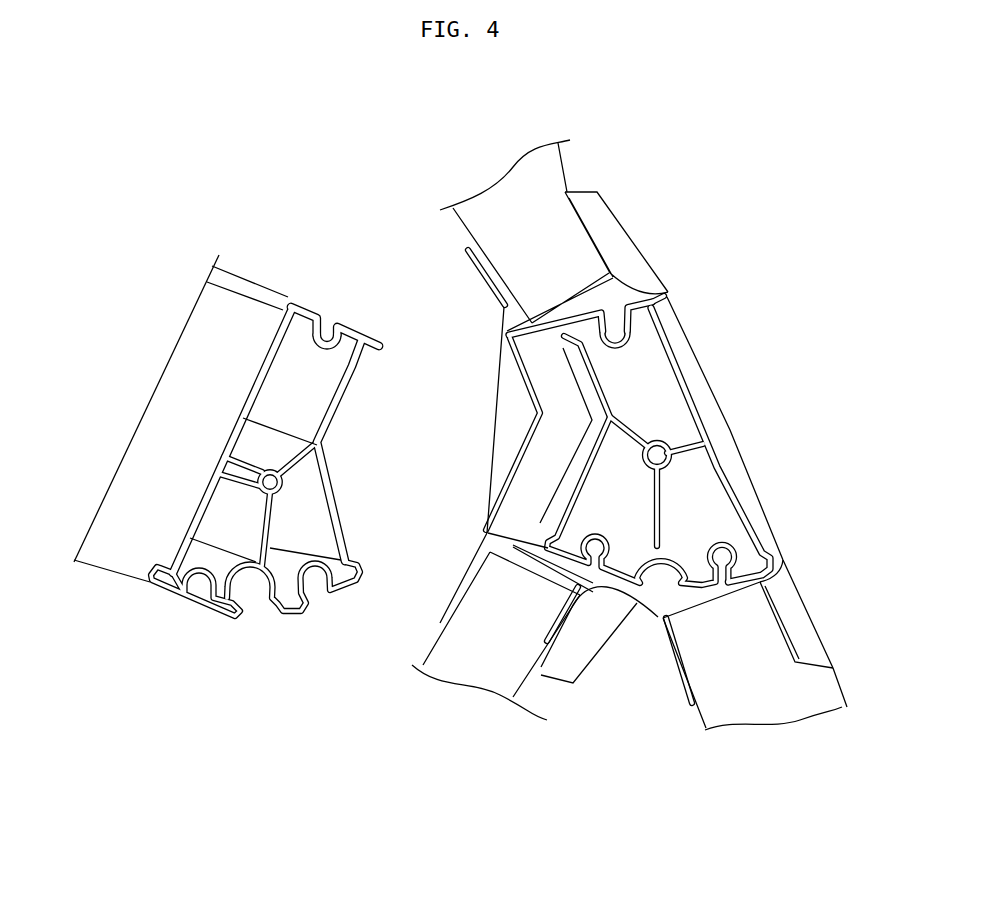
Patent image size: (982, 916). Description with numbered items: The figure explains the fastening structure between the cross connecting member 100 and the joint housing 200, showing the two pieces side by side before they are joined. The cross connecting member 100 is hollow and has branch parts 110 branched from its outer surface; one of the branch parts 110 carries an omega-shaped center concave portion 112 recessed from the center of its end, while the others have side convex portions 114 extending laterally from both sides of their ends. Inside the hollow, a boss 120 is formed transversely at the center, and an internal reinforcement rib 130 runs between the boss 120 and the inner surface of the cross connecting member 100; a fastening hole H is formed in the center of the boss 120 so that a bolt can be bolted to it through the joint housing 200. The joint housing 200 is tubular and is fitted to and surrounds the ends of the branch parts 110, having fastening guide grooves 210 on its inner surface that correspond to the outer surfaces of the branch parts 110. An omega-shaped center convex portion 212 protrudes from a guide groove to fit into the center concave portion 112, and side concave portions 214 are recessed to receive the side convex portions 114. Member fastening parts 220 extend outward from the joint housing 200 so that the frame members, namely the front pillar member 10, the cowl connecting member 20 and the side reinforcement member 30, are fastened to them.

The cross connecting member 100 is at (240, 250).
The branch parts 110 is at (225, 375).
The center concave portion 112 is at (328, 332).
The side convex portions 114 is at (300, 297).
The boss 120 is at (247, 458).
The internal reinforcement rib 130 is at (243, 472).
The fastening hole H is at (277, 487).
The front pillar member 10 is at (503, 207).
The cowl connecting member 20 is at (740, 697).
The side reinforcement member 30 is at (483, 661).
The joint housing 200 is at (733, 455).
The fastening guide grooves 210 is at (668, 384).
The center convex portion 212 is at (652, 322).
The side concave portions 214 is at (663, 298).
The member fastening parts 220 is at (603, 220).